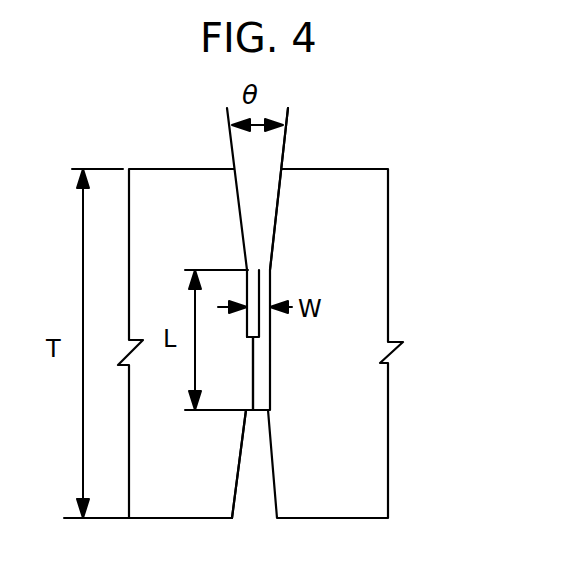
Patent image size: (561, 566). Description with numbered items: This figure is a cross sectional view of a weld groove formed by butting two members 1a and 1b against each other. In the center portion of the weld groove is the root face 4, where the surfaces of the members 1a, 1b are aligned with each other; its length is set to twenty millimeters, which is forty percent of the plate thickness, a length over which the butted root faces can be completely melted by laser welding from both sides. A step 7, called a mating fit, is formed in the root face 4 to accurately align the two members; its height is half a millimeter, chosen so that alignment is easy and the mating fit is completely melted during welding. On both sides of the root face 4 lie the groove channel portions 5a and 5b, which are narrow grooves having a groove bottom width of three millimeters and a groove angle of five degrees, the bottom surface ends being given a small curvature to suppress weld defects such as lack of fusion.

The member 1a is at (178, 197).
The member 1b is at (368, 242).
The groove channel portion 5a is at (275, 227).
The groove channel portion 5b is at (237, 460).
The step (mating fit) 7 is at (260, 339).
The root face 4 is at (255, 385).